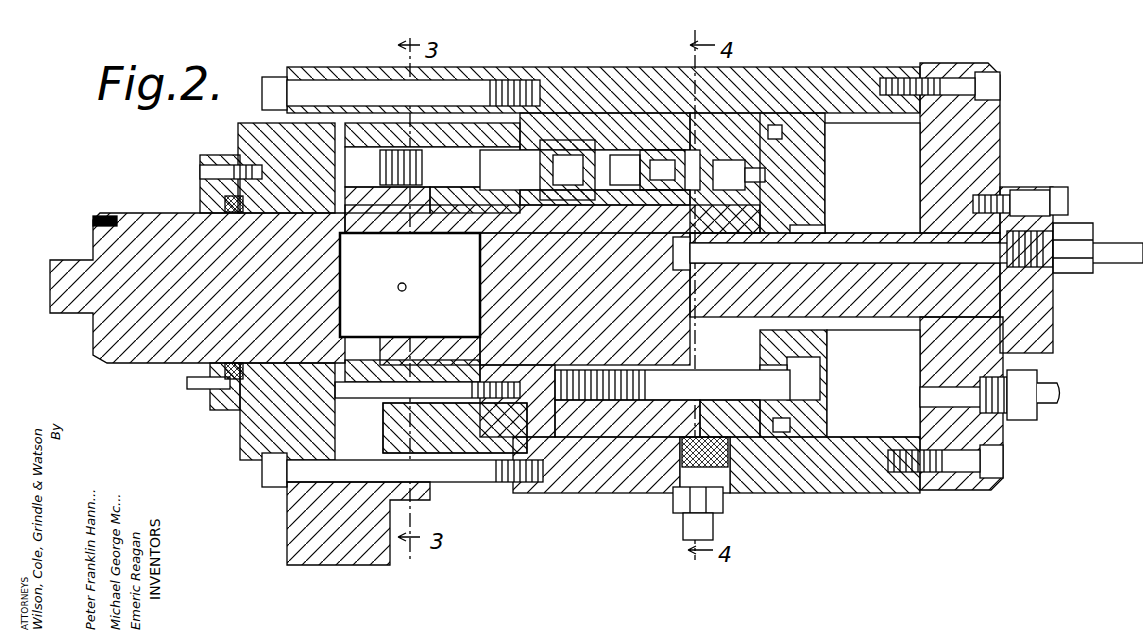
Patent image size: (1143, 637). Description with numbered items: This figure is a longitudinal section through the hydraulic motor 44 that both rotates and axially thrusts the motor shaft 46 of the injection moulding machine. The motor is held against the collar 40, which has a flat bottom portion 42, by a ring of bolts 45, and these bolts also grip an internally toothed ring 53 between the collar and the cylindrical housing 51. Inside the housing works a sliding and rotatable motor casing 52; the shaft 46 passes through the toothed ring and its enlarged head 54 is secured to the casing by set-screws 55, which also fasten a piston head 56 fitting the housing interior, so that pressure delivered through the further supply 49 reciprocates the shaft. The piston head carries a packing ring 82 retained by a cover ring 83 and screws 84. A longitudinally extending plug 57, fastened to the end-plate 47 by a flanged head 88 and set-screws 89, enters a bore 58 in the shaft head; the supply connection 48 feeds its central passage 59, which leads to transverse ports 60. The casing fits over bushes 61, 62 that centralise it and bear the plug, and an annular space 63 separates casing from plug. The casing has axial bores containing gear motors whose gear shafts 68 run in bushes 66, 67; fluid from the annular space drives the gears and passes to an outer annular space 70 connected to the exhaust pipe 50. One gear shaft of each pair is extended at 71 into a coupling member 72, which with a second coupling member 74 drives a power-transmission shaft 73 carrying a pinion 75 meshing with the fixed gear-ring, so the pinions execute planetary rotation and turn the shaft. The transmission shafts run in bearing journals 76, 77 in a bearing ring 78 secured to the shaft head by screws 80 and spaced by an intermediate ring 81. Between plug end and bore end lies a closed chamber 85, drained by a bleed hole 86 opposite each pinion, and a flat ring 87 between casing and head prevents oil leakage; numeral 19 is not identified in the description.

The cap block 19 is at (440, 400).
The collar 40 is at (290, 85).
The flat bottom portion 42 is at (300, 562).
The hydraulic motor 44 is at (807, 57).
The bolts 45 is at (430, 92).
The motor shaft 46 is at (150, 232).
The end-plate 47 is at (960, 78).
The supply connection 48 is at (1105, 247).
The further supply 49 is at (1048, 403).
The exhaust pipe 50 is at (708, 522).
The cylindrical housing 51 is at (825, 435).
The motor casing 52 is at (590, 430).
The internally toothed ring 53 is at (430, 148).
The enlarged head 54 is at (505, 462).
The set-screws 55 is at (640, 402).
The piston head 56 is at (760, 120).
The plug 57 is at (1030, 192).
The bore 58 is at (392, 296).
The central passage 59 is at (960, 265).
The transverse ports 60 is at (800, 190).
The bush 61 is at (490, 235).
The bush 62 is at (800, 228).
The annular space 63 is at (625, 175).
The bush 66 is at (655, 160).
The bush 67 is at (760, 128).
The gear shafts 68 is at (735, 165).
The outer annular space 70 is at (800, 445).
The extended shaft portion 71 is at (615, 168).
The coupling member 72 is at (562, 142).
The power-transmission shaft 73 is at (500, 165).
The second coupling member 74 is at (535, 165).
The pinion 75 is at (385, 160).
The bearing journal 76 is at (470, 140).
The bearing journal 77 is at (330, 135).
The bearing ring 78 is at (228, 378).
The screws 80 is at (410, 410).
The intermediate ring 81 is at (268, 430).
The packing ring 82 is at (780, 432).
The cover ring 83 is at (870, 478).
The screws 84 is at (880, 110).
The closed chamber 85 is at (392, 266).
The bleed hole 86 is at (300, 213).
The flat ring 87 is at (530, 420).
The flanged head 88 is at (1053, 330).
The set-screws 89 is at (1062, 200).